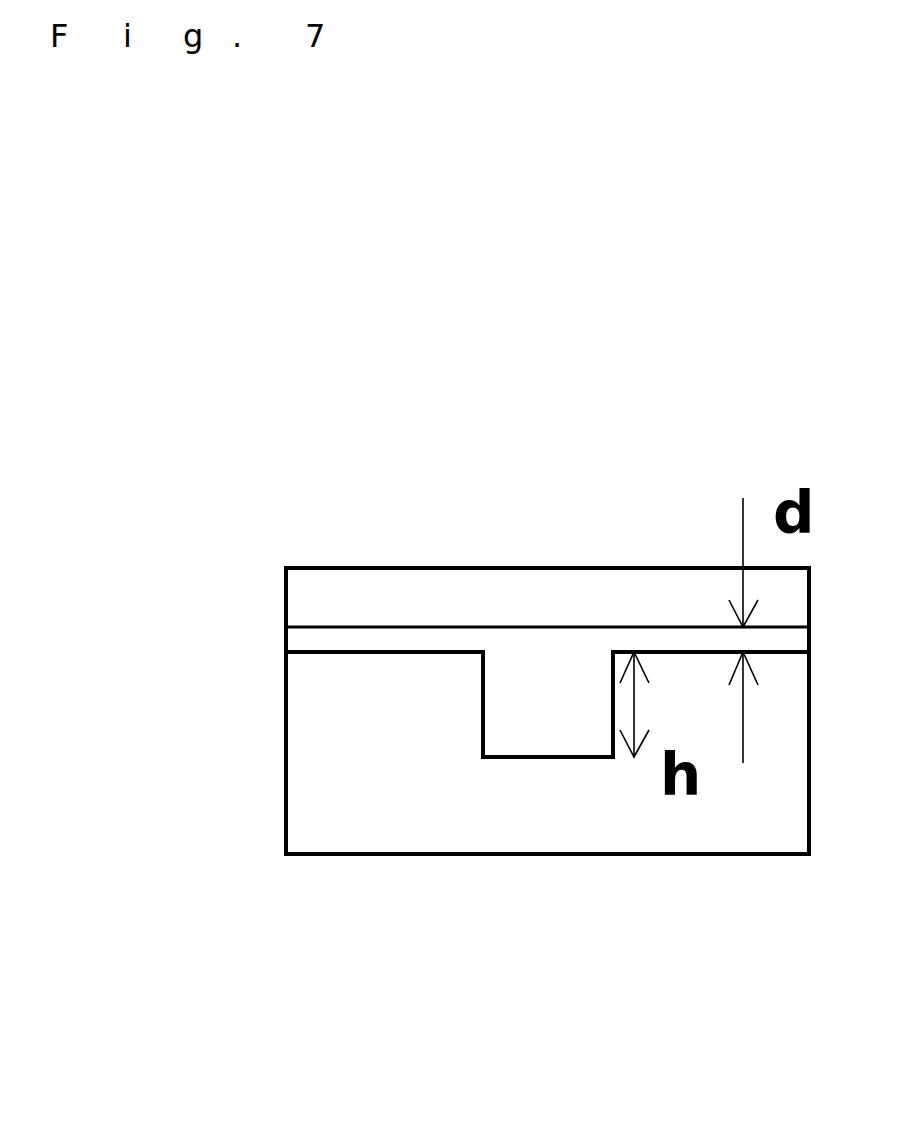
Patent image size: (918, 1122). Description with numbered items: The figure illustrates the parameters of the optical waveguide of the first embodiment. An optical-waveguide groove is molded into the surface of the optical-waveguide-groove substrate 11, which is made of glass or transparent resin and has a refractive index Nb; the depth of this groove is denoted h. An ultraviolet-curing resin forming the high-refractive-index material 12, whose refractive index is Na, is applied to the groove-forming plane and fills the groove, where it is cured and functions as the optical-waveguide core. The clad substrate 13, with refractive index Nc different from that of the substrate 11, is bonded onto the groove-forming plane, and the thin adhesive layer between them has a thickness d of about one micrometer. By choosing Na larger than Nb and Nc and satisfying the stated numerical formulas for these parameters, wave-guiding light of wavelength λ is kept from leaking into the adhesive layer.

The optical-waveguide-groove substrate 11 is at (735, 812).
The high-refractive-index material 12 is at (495, 645).
The clad substrate 13 is at (588, 590).